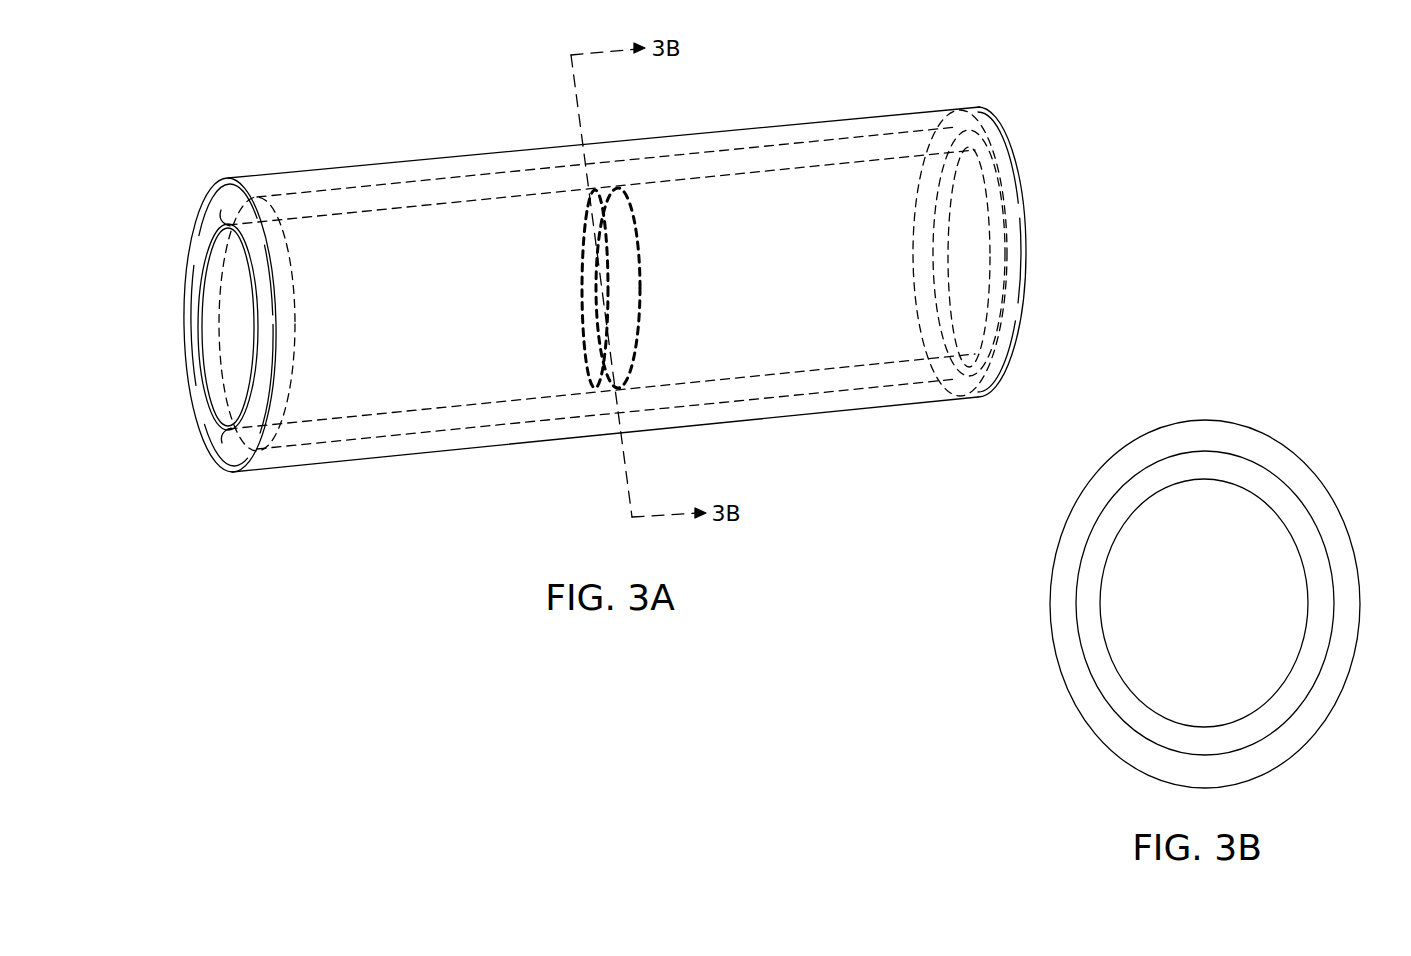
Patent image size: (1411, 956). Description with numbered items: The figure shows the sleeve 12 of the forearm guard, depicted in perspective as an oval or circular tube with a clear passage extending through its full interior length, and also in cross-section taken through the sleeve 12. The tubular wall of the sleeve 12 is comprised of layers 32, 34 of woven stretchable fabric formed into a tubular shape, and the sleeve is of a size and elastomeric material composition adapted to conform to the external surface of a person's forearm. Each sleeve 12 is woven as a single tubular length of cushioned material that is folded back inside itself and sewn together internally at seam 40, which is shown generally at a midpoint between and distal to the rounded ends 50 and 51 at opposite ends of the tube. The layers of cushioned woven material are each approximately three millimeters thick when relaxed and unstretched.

In FIG. 3A, the sleeve 12 is at (412, 143).
In FIG. 3B, the sleeve 12 is at (1203, 393).
In FIG. 3A, the layer of woven stretchable fabric 34 is at (228, 178).
In FIG. 3B, the layer of woven stretchable fabric 34 is at (1050, 593).
In FIG. 3A, the layer of woven stretchable fabric 32 is at (217, 315).
In FIG. 3B, the layer of woven stretchable fabric 32 is at (1124, 681).
In FIG. 3A, the rounded end 50 is at (198, 367).
In FIG. 3A, the seam 40 is at (593, 363).
In FIG. 3A, the rounded end 51 is at (1020, 197).